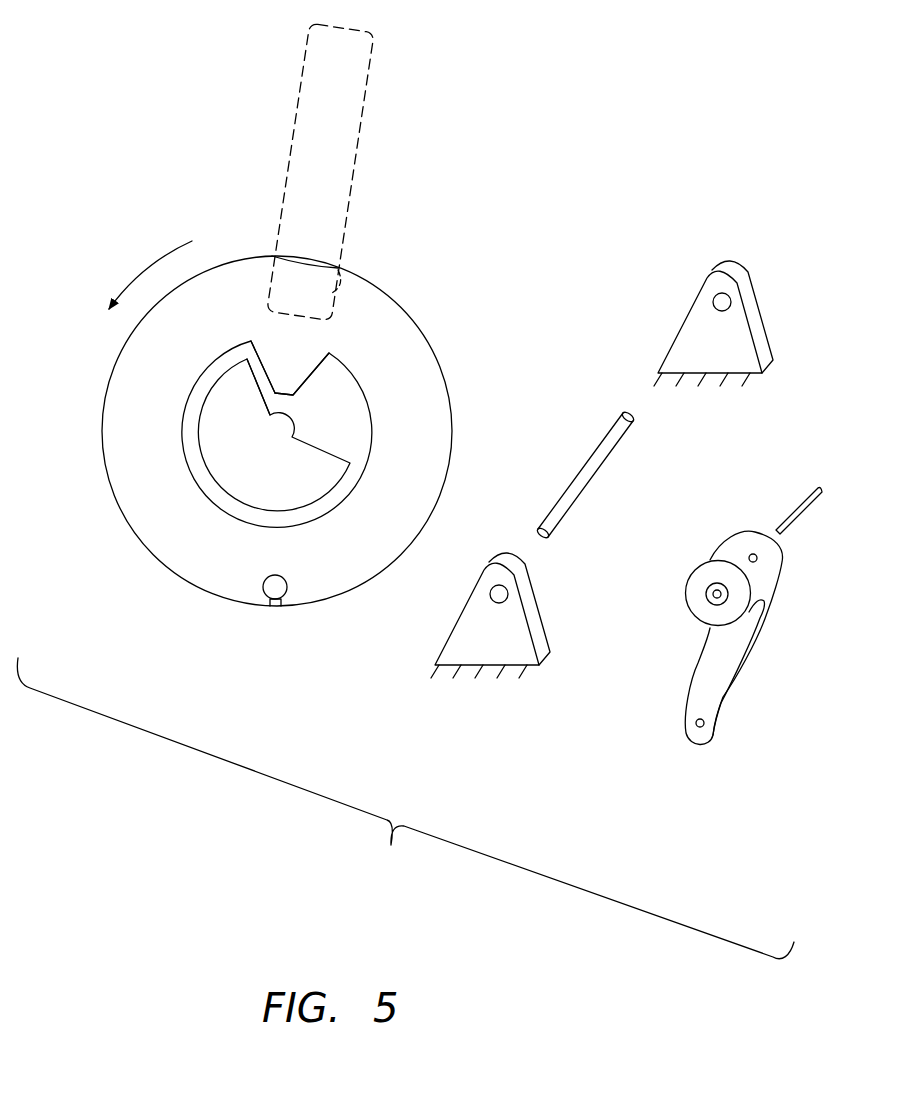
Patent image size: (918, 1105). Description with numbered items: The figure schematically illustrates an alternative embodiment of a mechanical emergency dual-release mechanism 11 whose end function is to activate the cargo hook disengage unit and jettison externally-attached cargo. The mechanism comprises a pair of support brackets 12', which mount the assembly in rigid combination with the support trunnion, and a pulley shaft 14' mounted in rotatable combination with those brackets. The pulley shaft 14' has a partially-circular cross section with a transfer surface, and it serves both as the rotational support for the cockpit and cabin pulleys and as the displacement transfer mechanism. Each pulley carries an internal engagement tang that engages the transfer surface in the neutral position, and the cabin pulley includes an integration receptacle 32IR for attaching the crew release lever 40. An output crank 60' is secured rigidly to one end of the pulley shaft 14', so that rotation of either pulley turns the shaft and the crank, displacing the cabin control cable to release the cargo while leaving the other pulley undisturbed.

The mechanical emergency dual-release mechanism 11 is at (405, 808).
The support brackets 12' is at (623, 504).
The pulley shaft 14' is at (461, 449).
The integration receptacle 32IR is at (342, 288).
The crew release lever 40 is at (333, 116).
The output crank 60' is at (767, 616).